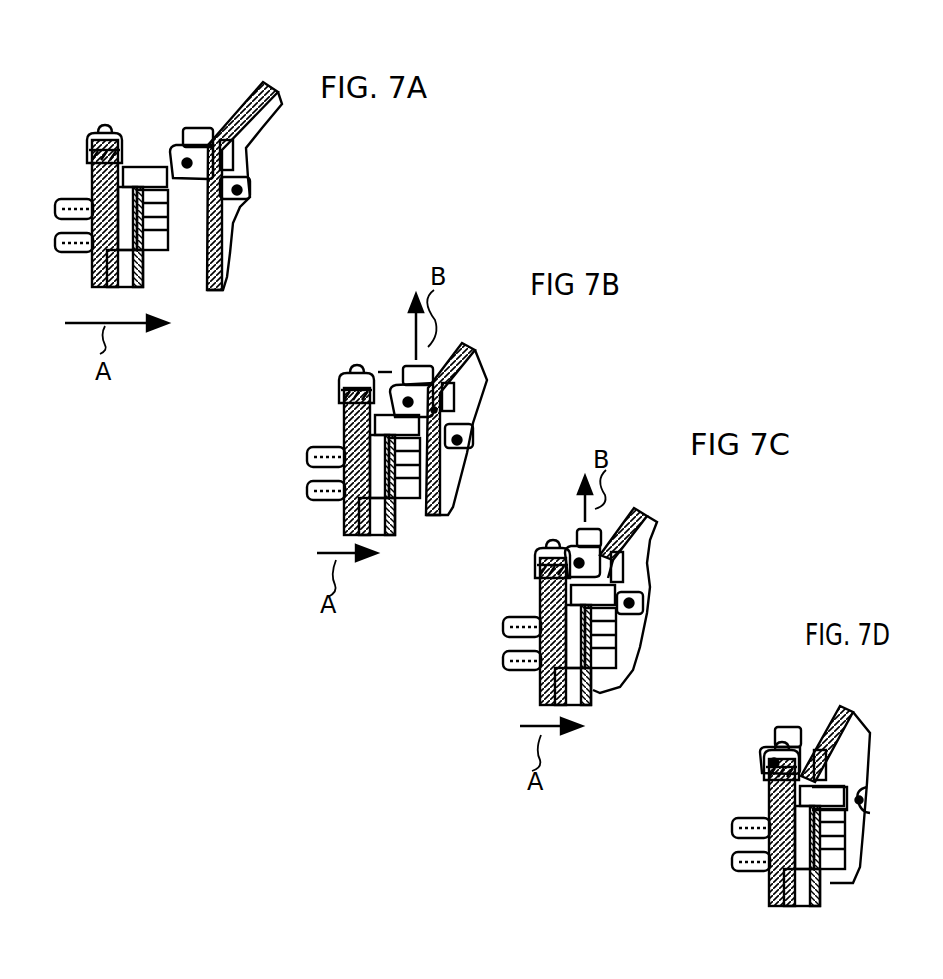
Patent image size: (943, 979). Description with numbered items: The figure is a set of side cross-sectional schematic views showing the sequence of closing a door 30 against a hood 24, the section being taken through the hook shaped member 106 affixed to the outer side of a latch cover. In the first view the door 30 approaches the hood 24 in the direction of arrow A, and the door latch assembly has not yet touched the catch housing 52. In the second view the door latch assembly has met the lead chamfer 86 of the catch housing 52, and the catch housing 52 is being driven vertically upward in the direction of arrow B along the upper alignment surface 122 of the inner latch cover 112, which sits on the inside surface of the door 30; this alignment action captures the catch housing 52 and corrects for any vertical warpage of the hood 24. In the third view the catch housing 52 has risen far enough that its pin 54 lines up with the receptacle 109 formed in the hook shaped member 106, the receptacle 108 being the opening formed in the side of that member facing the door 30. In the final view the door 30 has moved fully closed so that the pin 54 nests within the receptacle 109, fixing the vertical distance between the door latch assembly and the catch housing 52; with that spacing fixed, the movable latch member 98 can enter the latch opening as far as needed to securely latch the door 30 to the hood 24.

In FIG. 7A, the hood 24 is at (266, 84).
In FIG. 7B, the hood 24 is at (465, 345).
In FIG. 7C, the hood 24 is at (635, 508).
In FIG. 7D, the hood 24 is at (844, 710).
In FIG. 7A, the door 30 is at (100, 287).
In FIG. 7B, the door 30 is at (362, 508).
In FIG. 7C, the door 30 is at (545, 685).
In FIG. 7D, the door 30 is at (792, 887).
In FIG. 7A, the catch housing 52 is at (200, 128).
In FIG. 7B, the catch housing 52 is at (408, 370).
In FIG. 7C, the catch housing 52 is at (582, 529).
In FIG. 7D, the catch housing 52 is at (776, 727).
In FIG. 7A, the pin 54 is at (175, 155).
In FIG. 7B, the pin 54 is at (387, 390).
In FIG. 7C, the pin 54 is at (574, 548).
In FIG. 7D, the pin 54 is at (770, 773).
In FIG. 7B, the lead chamfer 86 is at (436, 410).
In FIG. 7A, the movable latch member 98 is at (55, 205).
In FIG. 7B, the movable latch member 98 is at (305, 456).
In FIG. 7C, the movable latch member 98 is at (503, 626).
In FIG. 7D, the movable latch member 98 is at (732, 826).
In FIG. 7A, the hook shaped member 106 is at (95, 138).
In FIG. 7B, the hook shaped member 106 is at (340, 392).
In FIG. 7C, the hook shaped member 106 is at (548, 578).
In FIG. 7D, the hook shaped member 106 is at (781, 765).
In FIG. 7A, the receptacle 108 is at (105, 126).
In FIG. 7B, the receptacle 109 is at (357, 370).
In FIG. 7C, the receptacle 109 is at (549, 550).
In FIG. 7D, the receptacle 109 is at (805, 745).
In FIG. 7A, the inner latch cover 112 is at (145, 165).
In FIG. 7B, the inner latch cover 112 is at (405, 500).
In FIG. 7C, the inner latch cover 112 is at (575, 636).
In FIG. 7D, the inner latch cover 112 is at (804, 837).
In FIG. 7B, the upper alignment surface 122 is at (385, 372).